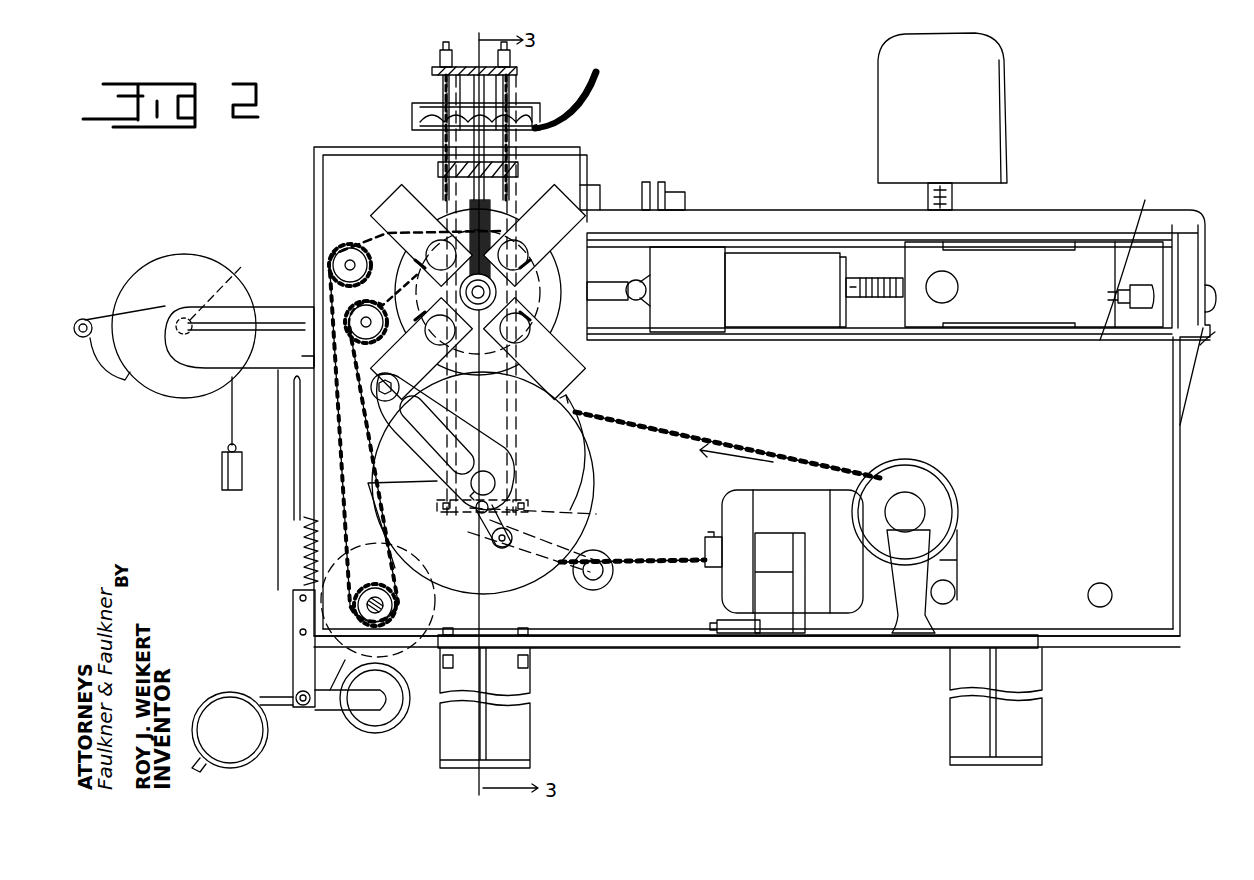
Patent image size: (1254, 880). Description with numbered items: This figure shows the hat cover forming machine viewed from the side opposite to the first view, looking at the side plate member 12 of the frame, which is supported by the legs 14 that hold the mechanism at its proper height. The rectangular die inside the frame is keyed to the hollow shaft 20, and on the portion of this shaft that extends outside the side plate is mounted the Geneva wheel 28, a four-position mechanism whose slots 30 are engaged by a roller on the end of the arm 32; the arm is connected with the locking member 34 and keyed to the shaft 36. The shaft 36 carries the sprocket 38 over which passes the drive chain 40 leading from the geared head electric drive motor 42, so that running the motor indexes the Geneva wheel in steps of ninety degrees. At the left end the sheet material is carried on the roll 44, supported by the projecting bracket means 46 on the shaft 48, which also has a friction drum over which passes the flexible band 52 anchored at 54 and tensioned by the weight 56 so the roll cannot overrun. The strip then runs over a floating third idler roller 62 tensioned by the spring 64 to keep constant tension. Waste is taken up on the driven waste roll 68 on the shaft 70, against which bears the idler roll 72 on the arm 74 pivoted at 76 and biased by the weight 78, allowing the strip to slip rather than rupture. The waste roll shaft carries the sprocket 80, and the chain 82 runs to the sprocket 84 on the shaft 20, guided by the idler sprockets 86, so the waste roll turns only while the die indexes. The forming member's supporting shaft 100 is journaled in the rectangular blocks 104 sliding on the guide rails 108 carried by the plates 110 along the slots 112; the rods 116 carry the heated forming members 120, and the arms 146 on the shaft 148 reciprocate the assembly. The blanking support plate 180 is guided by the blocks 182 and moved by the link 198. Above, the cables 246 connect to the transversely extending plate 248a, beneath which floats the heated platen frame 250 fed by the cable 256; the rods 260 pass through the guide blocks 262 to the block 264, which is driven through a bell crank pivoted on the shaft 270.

The side plate member 12 is at (1140, 438).
The legs 14 is at (935, 712).
The hollow shaft 20 is at (498, 300).
The Geneva wheel 28 is at (418, 200).
The slots 30 is at (575, 380).
The arm 32 is at (430, 420).
The locking member 34 is at (594, 480).
The shaft 36 is at (495, 480).
The sprocket 38 is at (462, 400).
The drive chain 40 is at (745, 430).
The geared head electric drive motor 42 is at (820, 492).
The roll 44 is at (210, 270).
The projecting bracket means 46 is at (210, 348).
The shaft 48 is at (216, 289).
The flexible band 52 is at (100, 310).
The anchor 54 is at (78, 320).
The weight 56 is at (228, 480).
The third idler roller 62 is at (295, 400).
The spring 64 is at (300, 553).
The driven waste roll 68 is at (345, 660).
The shaft 70 is at (437, 598).
The idler roll 72 is at (378, 715).
The arm 74 is at (345, 705).
The pivot 76 is at (298, 705).
The weight 78 is at (228, 758).
The sprocket 80 is at (385, 608).
The chain 82 is at (356, 470).
The sprocket 84 is at (405, 290).
The idler sprockets 86 is at (340, 252).
The supporting shaft 100 is at (946, 300).
The rectangular blocks 104 is at (920, 333).
The guide rails 108 is at (1010, 330).
The plates 110 is at (1085, 330).
The slots 112 is at (1137, 256).
The rods 116 is at (880, 300).
The forming members 120 is at (1005, 160).
The arms 146 is at (1220, 331).
The shaft 148 is at (1100, 595).
The support plate 180 is at (665, 195).
The blocks 182 is at (690, 320).
The link 198 is at (640, 290).
The cables 246 is at (440, 137).
The transversely extending plate 248a is at (520, 70).
The frame 250 is at (490, 98).
The cable 256 is at (600, 90).
The rods 260 is at (440, 100).
The guide blocks 262 is at (520, 165).
The block 264 is at (596, 514).
The shaft 270 is at (590, 580).